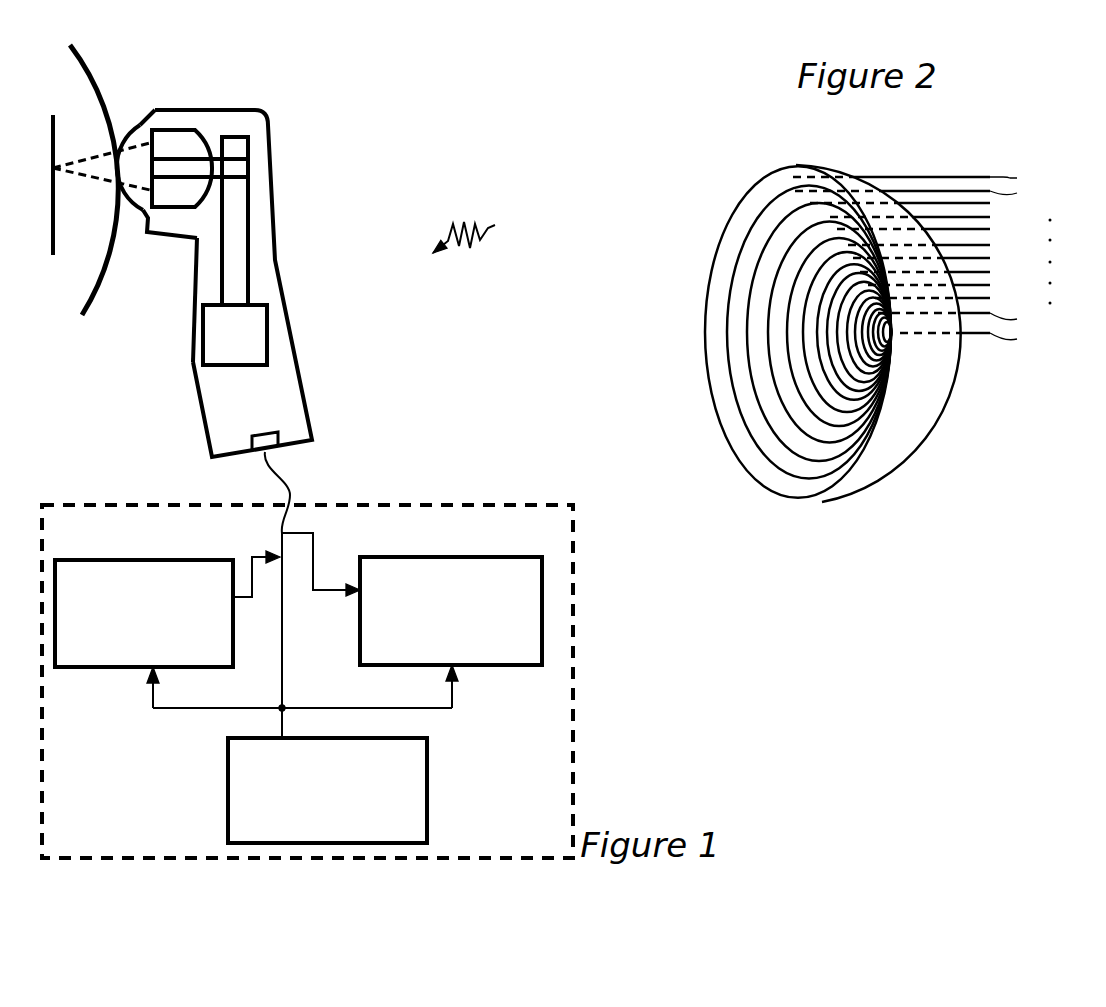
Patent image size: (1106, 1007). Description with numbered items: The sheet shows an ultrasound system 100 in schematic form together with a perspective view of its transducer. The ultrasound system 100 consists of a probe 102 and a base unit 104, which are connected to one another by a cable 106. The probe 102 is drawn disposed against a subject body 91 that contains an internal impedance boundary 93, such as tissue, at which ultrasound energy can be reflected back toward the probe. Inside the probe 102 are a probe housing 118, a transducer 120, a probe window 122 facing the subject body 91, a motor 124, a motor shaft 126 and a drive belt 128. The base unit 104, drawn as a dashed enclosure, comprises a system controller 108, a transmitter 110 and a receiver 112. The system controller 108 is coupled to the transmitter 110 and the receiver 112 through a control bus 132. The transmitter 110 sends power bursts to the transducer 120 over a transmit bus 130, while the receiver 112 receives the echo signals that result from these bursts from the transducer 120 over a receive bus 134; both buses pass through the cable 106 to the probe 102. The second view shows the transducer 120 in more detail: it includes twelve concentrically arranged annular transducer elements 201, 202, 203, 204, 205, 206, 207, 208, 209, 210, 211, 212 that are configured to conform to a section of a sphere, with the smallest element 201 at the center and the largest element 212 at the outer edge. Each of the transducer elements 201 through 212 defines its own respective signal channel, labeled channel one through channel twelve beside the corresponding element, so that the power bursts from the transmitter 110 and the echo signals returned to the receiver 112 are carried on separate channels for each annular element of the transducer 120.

In FIG. 1, the subject body 91 is at (84, 62).
In FIG. 1, the internal impedance boundary 93 is at (58, 123).
In FIG. 1, the ultrasound system 100 is at (480, 229).
In FIG. 1, the probe 102 is at (257, 251).
In FIG. 1, the base unit 104 is at (88, 503).
In FIG. 1, the cable 106 is at (287, 485).
In FIG. 1, the system controller 108 is at (327, 790).
In FIG. 1, the transmitter 110 is at (144, 613).
In FIG. 1, the receiver 112 is at (451, 611).
In FIG. 1, the probe housing 118 is at (287, 288).
In FIG. 1, the transducer 120 is at (182, 130).
In FIG. 2, the transducer 120 is at (972, 605).
In FIG. 1, the probe window 122 is at (130, 130).
In FIG. 1, the motor 124 is at (235, 335).
In FIG. 1, the motor shaft 126 is at (218, 272).
In FIG. 1, the drive belt 128 is at (197, 258).
In FIG. 1, the transmit bus 130 is at (270, 553).
In FIG. 1, the control bus 132 is at (283, 724).
In FIG. 1, the receive bus 134 is at (318, 573).
In FIG. 2, the annular transducer element 201 is at (893, 341).
In FIG. 2, the annular transducer element 202 is at (893, 350).
In FIG. 2, the annular transducer element 203 is at (893, 365).
In FIG. 2, the annular transducer element 204 is at (890, 385).
In FIG. 2, the annular transducer element 205 is at (887, 402).
In FIG. 2, the annular transducer element 206 is at (883, 412).
In FIG. 2, the annular transducer element 207 is at (853, 418).
In FIG. 2, the annular transducer element 208 is at (818, 412).
In FIG. 2, the annular transducer element 209 is at (800, 412).
In FIG. 2, the annular transducer element 210 is at (770, 258).
In FIG. 2, the annular transducer element 211 is at (772, 213).
In FIG. 2, the annular transducer element 212 is at (783, 177).